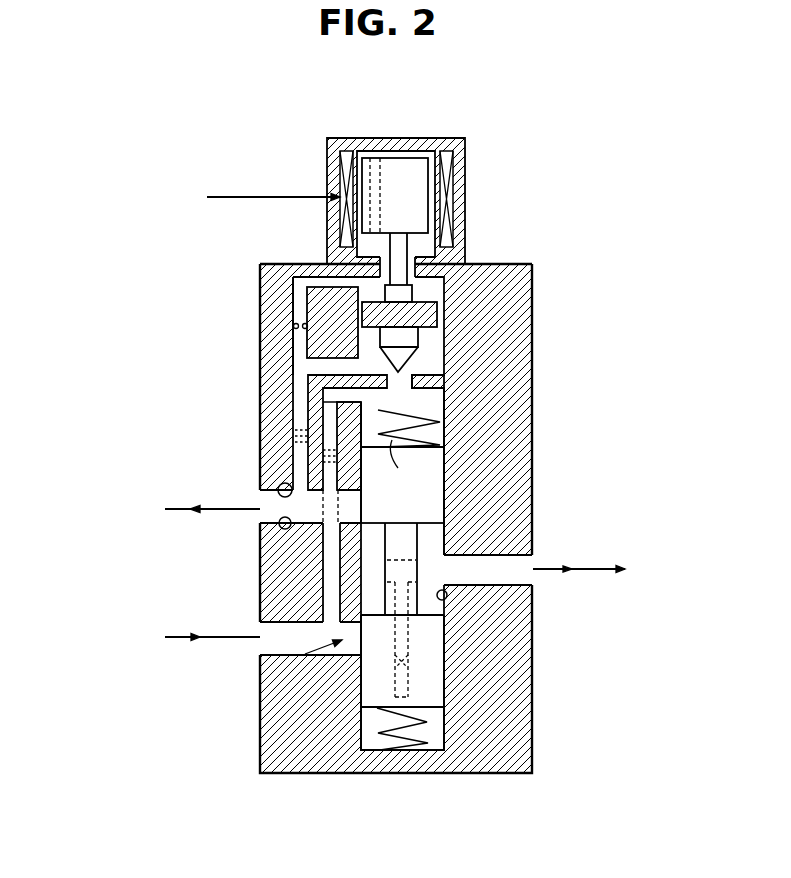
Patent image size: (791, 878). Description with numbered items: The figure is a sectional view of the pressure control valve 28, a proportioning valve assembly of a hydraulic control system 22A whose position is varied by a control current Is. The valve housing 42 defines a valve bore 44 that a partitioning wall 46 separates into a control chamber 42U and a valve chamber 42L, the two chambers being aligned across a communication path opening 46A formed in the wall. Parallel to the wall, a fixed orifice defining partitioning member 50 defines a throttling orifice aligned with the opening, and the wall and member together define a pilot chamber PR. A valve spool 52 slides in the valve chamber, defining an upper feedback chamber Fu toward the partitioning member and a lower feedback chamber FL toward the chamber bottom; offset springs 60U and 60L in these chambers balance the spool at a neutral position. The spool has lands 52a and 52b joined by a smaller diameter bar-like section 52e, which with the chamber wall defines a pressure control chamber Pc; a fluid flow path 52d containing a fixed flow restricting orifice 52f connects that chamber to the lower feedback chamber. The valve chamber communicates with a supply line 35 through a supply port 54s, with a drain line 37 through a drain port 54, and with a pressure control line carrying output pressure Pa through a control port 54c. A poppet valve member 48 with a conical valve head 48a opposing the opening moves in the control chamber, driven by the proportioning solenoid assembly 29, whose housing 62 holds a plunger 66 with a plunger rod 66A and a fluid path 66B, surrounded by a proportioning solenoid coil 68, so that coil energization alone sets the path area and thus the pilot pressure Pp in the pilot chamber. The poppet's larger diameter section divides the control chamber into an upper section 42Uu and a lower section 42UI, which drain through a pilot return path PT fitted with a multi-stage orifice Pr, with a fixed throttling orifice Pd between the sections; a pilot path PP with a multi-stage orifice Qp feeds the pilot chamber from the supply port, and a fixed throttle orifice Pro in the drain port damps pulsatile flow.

The pressure control valve 28 is at (560, 205).
The proportioning solenoid assembly 29 is at (476, 188).
The housing 62 is at (443, 137).
The proportioning solenoid coil 68 is at (340, 163).
The plunger 66 is at (402, 170).
The fluid path 66B is at (373, 163).
The plunger rod 66A is at (398, 248).
The control current Is is at (261, 199).
The pressure regulating valve 22A is at (543, 408).
The valve housing 42 is at (307, 752).
The upper section 42Uu is at (335, 265).
The poppet valve member 48 is at (432, 290).
The control chamber 42U is at (430, 318).
The partitioning wall 46 is at (420, 341).
The communication path opening 46A is at (404, 360).
The fixed throttling orifice Pd is at (292, 330).
The lower section 42UI is at (318, 343).
The valve head 48a is at (320, 378).
The pilot return path PT is at (330, 395).
The multi-stage orifice Pr is at (298, 433).
The valve chamber 42L is at (330, 440).
The multi-stage orifice Qp is at (328, 456).
The fixed throttle orifice Pro is at (276, 503).
The return passage 54 is at (262, 512).
The drain line 37 is at (208, 512).
The pilot path PP is at (330, 580).
The pilot chamber PR is at (447, 394).
The pilot pressure chamber Pp is at (445, 401).
The fixed orifice defining partitioning member 50 is at (447, 418).
The upper feedback chamber Fu is at (433, 440).
The valve spool 52 is at (401, 635).
The offset spring 60U is at (438, 481).
The land 52b is at (427, 480).
The pressure control chamber Pc is at (405, 630).
The bar-like section 52e is at (420, 561).
The land 52a is at (435, 665).
The fluid flow path 52d is at (437, 690).
The fixed flow restricting orifice 52f is at (400, 662).
The offset spring 60L is at (383, 737).
The lower feedback chamber FL is at (440, 737).
The control port 54c is at (520, 562).
The output pressure Pa is at (594, 572).
The valve bore 44 is at (447, 598).
The supply line 35 is at (190, 645).
The supply port 54s is at (287, 641).